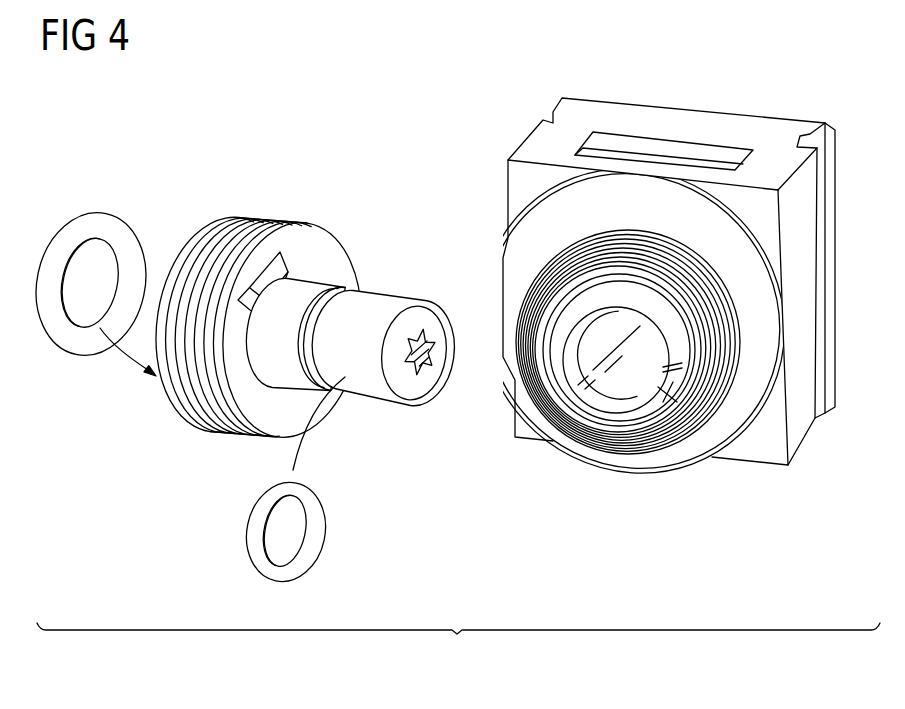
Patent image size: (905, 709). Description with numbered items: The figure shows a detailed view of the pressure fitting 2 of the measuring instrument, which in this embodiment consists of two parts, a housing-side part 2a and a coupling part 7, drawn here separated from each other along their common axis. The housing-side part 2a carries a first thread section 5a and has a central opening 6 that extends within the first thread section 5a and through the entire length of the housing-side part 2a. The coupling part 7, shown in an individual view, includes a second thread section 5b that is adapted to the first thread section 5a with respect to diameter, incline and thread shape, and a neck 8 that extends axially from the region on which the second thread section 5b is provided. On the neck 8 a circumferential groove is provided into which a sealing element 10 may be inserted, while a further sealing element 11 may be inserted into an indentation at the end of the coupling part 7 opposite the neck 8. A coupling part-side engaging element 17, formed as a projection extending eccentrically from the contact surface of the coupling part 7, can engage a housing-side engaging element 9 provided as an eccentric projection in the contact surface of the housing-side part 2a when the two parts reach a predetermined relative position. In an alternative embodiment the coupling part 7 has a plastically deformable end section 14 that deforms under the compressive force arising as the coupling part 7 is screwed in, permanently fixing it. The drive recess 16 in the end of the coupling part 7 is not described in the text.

The pressure fitting 2 is at (451, 367).
The housing-side part 2a is at (633, 295).
The first thread section 5a is at (642, 248).
The second thread section 5b is at (223, 423).
The central opening 6 is at (614, 378).
The coupling part 7 is at (313, 307).
The neck 8 is at (333, 293).
The housing-side engaging element 9 is at (668, 378).
The sealing element 10 is at (313, 535).
The sealing element 11 is at (103, 224).
The plastically deformable end section 14 is at (188, 413).
The drive recess 16 is at (436, 378).
The coupling part-side engaging element 17 is at (263, 273).